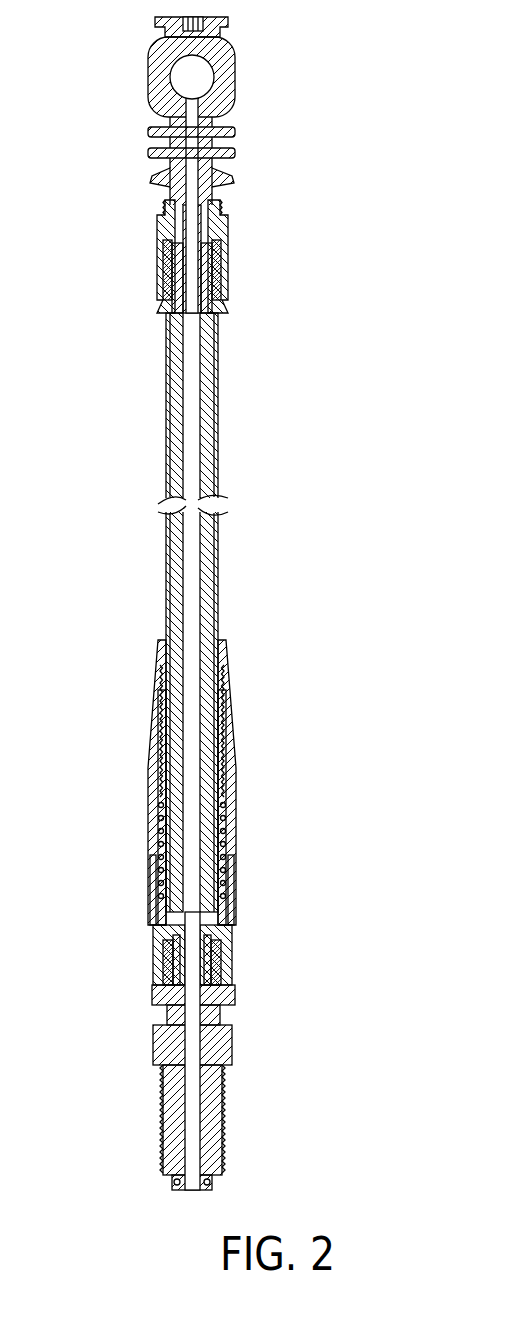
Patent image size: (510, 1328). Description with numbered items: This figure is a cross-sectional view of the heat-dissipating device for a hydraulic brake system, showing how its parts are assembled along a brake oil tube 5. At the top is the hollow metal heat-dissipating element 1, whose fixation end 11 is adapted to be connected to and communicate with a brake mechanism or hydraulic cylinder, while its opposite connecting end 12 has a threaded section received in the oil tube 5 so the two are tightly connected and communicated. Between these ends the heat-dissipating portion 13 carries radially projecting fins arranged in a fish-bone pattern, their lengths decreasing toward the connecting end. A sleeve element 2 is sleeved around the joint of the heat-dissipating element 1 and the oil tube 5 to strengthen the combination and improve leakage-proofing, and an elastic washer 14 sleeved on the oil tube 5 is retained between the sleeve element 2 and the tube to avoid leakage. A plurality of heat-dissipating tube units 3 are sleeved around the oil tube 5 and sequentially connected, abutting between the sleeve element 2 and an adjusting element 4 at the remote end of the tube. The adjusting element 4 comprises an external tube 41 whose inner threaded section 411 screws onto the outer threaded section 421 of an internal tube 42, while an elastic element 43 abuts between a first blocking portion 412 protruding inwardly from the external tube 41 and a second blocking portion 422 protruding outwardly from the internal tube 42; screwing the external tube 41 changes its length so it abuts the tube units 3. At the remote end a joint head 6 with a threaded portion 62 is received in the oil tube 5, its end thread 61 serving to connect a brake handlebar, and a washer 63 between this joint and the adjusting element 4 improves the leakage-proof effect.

The heat-dissipating element 1 is at (131, 98).
The fixation end 11 is at (233, 72).
The heat-dissipating portion 13 is at (226, 157).
The sleeve element 2 is at (163, 250).
The elastic washer 14 is at (167, 268).
The connecting end 12 is at (183, 290).
The heat-dissipating tube unit 3 is at (166, 372).
The brake oil tube 5 is at (178, 408).
The adjusting element 4 is at (195, 812).
The external tube 41 is at (227, 737).
The inner threaded section 411 is at (172, 705).
The first blocking portion 412 is at (223, 812).
The outer threaded section 421 is at (165, 785).
The second blocking portion 422 is at (236, 870).
The elastic element 43 is at (161, 822).
The internal tube 42 is at (221, 938).
The threaded portion 62 is at (216, 962).
The washer 63 is at (168, 958).
The joint head 6 is at (145, 1045).
The thread 61 is at (165, 1118).